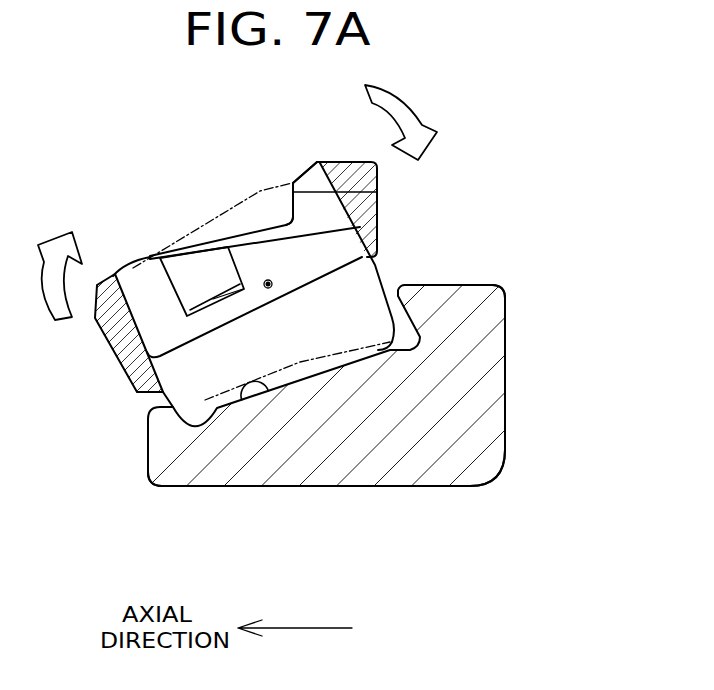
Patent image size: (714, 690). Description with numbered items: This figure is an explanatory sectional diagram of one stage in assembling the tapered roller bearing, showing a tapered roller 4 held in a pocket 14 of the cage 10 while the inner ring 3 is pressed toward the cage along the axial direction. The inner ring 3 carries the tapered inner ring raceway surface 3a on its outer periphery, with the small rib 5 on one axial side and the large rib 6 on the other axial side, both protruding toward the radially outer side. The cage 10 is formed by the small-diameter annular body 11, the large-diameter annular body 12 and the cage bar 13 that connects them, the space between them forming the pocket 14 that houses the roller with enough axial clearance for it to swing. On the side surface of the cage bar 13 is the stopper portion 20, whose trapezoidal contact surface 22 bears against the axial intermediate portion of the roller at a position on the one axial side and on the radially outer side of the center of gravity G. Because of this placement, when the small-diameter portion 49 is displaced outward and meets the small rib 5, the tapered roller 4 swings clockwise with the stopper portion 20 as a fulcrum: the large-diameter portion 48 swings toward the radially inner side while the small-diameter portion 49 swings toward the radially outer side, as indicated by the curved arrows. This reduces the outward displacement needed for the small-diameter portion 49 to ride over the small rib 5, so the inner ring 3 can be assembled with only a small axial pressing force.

The inner ring 3 is at (397, 457).
The inner ring raceway surface 3a is at (240, 395).
The tapered roller 4 is at (273, 185).
The small rib 5 is at (167, 454).
The large rib 6 is at (482, 317).
The cage 10 is at (347, 160).
The small-diameter annular body 11 is at (120, 348).
The large-diameter annular body 12 is at (362, 190).
The cage bar 13 is at (253, 232).
The pocket 14 is at (312, 243).
The stopper portion 20 is at (209, 243).
The contact surface 22 is at (184, 270).
The large-diameter portion 48 is at (360, 290).
The small-diameter portion 49 is at (134, 286).
The center of gravity G is at (270, 287).